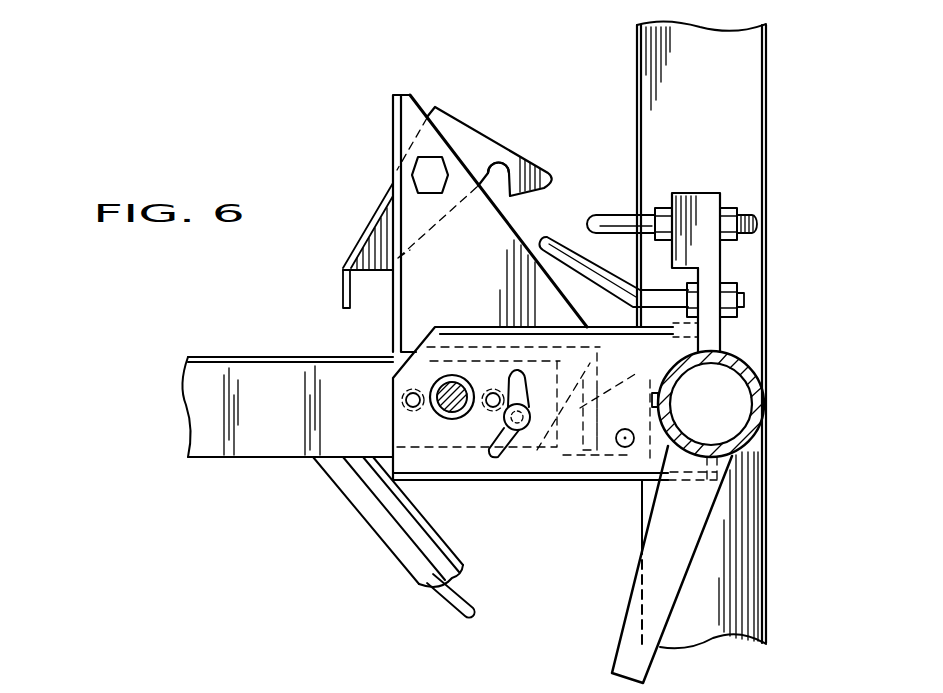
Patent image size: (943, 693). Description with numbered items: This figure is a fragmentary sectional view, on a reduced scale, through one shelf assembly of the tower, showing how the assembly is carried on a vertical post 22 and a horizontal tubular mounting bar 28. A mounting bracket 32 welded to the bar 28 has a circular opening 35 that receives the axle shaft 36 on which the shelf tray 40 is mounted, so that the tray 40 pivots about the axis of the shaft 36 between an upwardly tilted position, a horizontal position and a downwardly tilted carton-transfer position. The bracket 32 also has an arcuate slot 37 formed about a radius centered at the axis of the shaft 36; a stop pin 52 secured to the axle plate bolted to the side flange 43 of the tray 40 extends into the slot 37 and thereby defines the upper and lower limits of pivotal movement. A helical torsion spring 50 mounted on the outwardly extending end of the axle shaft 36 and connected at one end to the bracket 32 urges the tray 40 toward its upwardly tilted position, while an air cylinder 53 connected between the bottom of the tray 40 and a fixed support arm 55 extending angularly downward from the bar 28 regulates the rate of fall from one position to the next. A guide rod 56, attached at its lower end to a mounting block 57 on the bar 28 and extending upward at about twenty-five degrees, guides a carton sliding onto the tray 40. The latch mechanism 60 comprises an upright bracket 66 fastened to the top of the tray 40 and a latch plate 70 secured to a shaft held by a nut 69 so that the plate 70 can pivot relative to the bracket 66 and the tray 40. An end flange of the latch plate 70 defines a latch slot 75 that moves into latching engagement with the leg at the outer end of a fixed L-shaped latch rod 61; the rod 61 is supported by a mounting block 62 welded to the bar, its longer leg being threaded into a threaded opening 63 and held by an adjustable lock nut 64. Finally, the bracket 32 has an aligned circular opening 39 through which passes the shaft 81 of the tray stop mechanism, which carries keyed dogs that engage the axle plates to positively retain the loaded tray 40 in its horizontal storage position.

The vertical post 22 is at (648, 52).
The horizontal tubular mounting bar 28 is at (727, 360).
The mounting bracket 32 is at (632, 487).
The circular opening 35 is at (440, 410).
The axle shaft 36 is at (455, 415).
The arcuate slot 37 is at (503, 457).
The circular opening 39 is at (626, 428).
The shelf tray 40 is at (255, 355).
The side flange 43 is at (240, 442).
The helical torsion spring 50 is at (432, 410).
The stop pin 52 is at (523, 429).
The air cylinder 53 is at (388, 527).
The fixed support arm 55 is at (655, 563).
The guide rod 56 is at (567, 243).
The mounting block 57 is at (713, 268).
The latch mechanism 60 is at (503, 126).
The latch rod 61 is at (606, 216).
The mounting block 62 is at (698, 196).
The threaded opening 63 is at (661, 207).
The lock nut 64 is at (725, 203).
The upright bracket 66 is at (390, 114).
The nut 69 is at (425, 173).
The latch plate 70 is at (455, 116).
The latch slot 75 is at (498, 174).
The shaft 81 is at (630, 445).